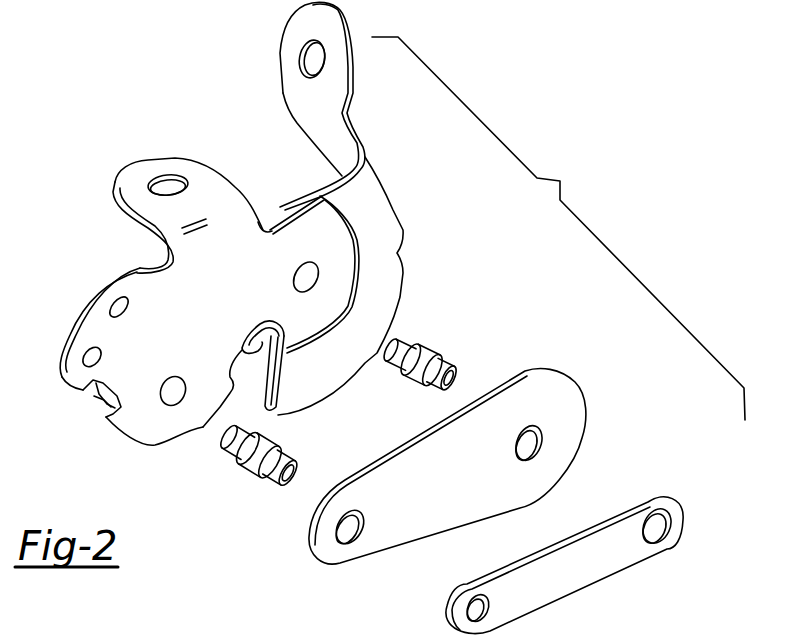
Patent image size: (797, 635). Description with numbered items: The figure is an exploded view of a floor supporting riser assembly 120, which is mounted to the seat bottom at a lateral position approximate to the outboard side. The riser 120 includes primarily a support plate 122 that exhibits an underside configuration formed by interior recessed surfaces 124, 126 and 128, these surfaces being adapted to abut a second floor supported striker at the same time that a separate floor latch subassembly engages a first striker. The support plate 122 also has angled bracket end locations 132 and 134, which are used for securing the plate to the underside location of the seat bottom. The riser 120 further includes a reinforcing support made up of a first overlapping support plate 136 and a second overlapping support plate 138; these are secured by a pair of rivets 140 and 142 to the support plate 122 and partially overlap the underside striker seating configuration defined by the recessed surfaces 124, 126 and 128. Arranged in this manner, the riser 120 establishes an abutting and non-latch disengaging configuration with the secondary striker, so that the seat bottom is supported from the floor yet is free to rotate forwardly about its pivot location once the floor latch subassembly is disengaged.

The floor supporting riser assembly 120 is at (558, 228).
The support plate 122 is at (190, 283).
The interior recessed surface 124 is at (248, 353).
The interior recessed surface 126 is at (242, 348).
The interior recessed surface 128 is at (266, 377).
The angled bracket end location 132 is at (142, 178).
The angled bracket end location 134 is at (294, 59).
The first overlapping support plate 136 is at (410, 520).
The second overlapping support plate 138 is at (550, 582).
The rivet 140 is at (248, 462).
The rivet 142 is at (428, 346).